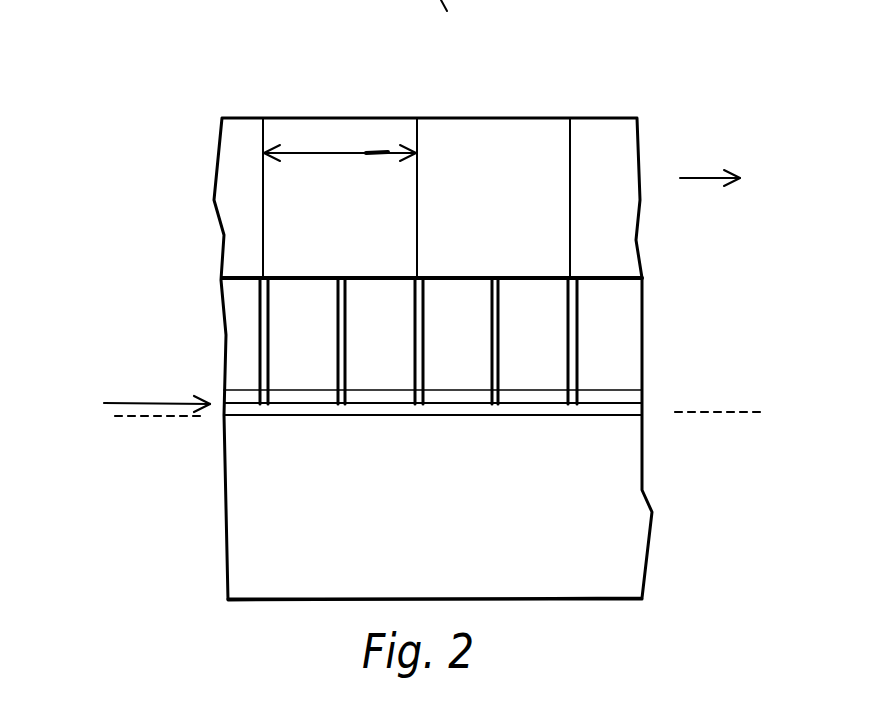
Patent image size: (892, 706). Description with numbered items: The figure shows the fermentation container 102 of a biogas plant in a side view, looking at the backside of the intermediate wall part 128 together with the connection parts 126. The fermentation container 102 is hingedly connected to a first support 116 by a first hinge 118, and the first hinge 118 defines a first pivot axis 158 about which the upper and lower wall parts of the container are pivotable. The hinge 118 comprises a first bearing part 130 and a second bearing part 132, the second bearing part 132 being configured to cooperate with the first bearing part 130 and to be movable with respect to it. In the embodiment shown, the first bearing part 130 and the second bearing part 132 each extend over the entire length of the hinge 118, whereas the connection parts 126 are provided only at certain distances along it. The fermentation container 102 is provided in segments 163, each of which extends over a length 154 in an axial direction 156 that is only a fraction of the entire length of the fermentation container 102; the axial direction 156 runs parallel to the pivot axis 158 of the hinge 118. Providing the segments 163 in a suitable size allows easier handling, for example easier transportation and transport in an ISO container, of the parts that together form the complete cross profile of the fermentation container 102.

The fermentation container 102 is at (598, 81).
The first support 116 is at (636, 502).
The first hinge 118 is at (129, 404).
The connection parts 126 is at (413, 314).
The intermediate wall part 128 is at (624, 331).
The first bearing part 130 is at (640, 412).
The second bearing part 132 is at (225, 399).
The length 154 is at (335, 150).
The axial direction 156 is at (706, 176).
The first pivot axis 158 is at (740, 409).
The segments 163 is at (398, 118).